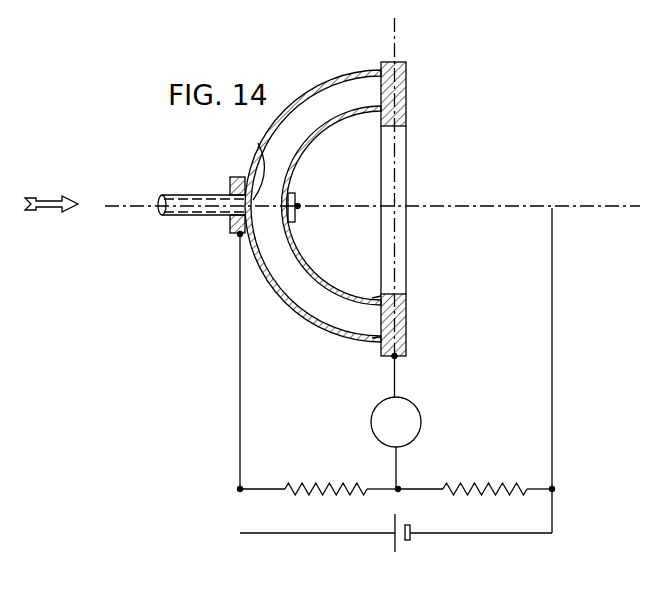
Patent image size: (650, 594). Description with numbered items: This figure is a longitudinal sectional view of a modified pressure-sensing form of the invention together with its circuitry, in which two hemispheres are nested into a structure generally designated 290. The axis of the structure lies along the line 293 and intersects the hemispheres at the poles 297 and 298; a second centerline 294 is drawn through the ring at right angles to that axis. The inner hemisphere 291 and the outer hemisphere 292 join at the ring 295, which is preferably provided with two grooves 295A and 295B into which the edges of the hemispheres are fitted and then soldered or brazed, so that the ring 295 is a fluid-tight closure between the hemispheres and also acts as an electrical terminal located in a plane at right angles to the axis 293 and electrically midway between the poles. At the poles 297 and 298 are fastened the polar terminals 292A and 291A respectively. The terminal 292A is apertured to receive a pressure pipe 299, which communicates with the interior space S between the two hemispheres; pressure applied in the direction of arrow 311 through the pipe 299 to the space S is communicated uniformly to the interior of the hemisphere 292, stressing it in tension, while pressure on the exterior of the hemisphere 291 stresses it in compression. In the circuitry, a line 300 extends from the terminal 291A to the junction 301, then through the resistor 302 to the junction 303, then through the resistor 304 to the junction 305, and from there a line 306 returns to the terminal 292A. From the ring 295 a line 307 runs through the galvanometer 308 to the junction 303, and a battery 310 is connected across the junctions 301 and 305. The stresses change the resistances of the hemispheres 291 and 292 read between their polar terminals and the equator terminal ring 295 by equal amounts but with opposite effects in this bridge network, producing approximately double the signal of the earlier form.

The nested hemisphere structure 290 is at (371, 68).
The inner hemisphere 291 is at (312, 141).
The polar terminal 291A is at (293, 222).
The outer hemisphere 292 is at (334, 77).
The polar terminal 292A is at (236, 176).
The axis 293 is at (133, 208).
The vertical axis 294 is at (396, 22).
The ring 295 is at (406, 352).
The groove 295A is at (406, 298).
The groove 295B is at (406, 322).
The pole 297 is at (262, 149).
The pole 298 is at (297, 195).
The pressure pipe 299 is at (194, 216).
The line 300 is at (553, 414).
The junction 301 is at (554, 487).
The resistor 302 is at (478, 487).
The junction 303 is at (401, 487).
The resistor 304 is at (326, 471).
The junction 305 is at (243, 487).
The line 306 is at (238, 392).
The line 307 is at (397, 380).
The galvanometer 308 is at (421, 426).
The battery 310 is at (410, 541).
The arrow 311 is at (62, 208).
The interior space S is at (334, 316).